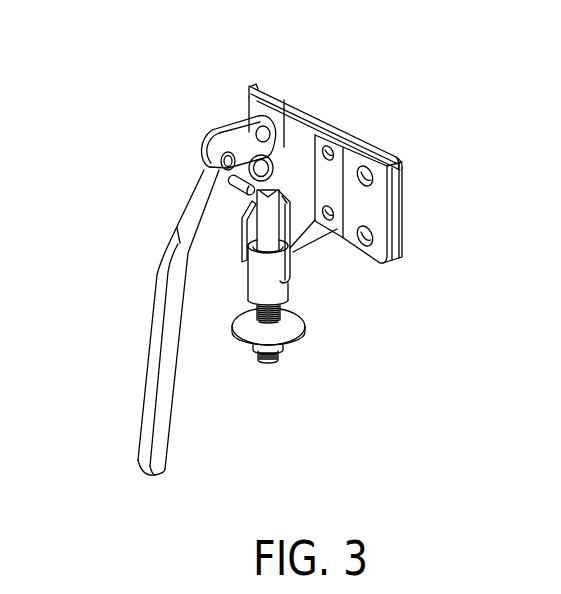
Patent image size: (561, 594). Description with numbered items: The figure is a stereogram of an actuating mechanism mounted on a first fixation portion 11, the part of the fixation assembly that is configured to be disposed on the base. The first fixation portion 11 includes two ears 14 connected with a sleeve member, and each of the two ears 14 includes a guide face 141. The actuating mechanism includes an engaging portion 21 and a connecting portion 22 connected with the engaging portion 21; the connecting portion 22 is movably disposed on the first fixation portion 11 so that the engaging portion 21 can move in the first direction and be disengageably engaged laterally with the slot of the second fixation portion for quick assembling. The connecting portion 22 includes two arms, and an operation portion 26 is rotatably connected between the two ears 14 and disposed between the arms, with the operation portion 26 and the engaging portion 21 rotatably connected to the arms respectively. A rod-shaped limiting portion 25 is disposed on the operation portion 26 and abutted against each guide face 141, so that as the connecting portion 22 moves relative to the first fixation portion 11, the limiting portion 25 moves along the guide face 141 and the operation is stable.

The first fixation portion 11 is at (373, 138).
The ears 14 is at (297, 155).
The guide face 141 is at (258, 150).
The engaging portion 21 is at (313, 278).
The connecting portion 22 is at (211, 121).
The limiting portion 25 is at (238, 190).
The operation portion 26 is at (146, 400).